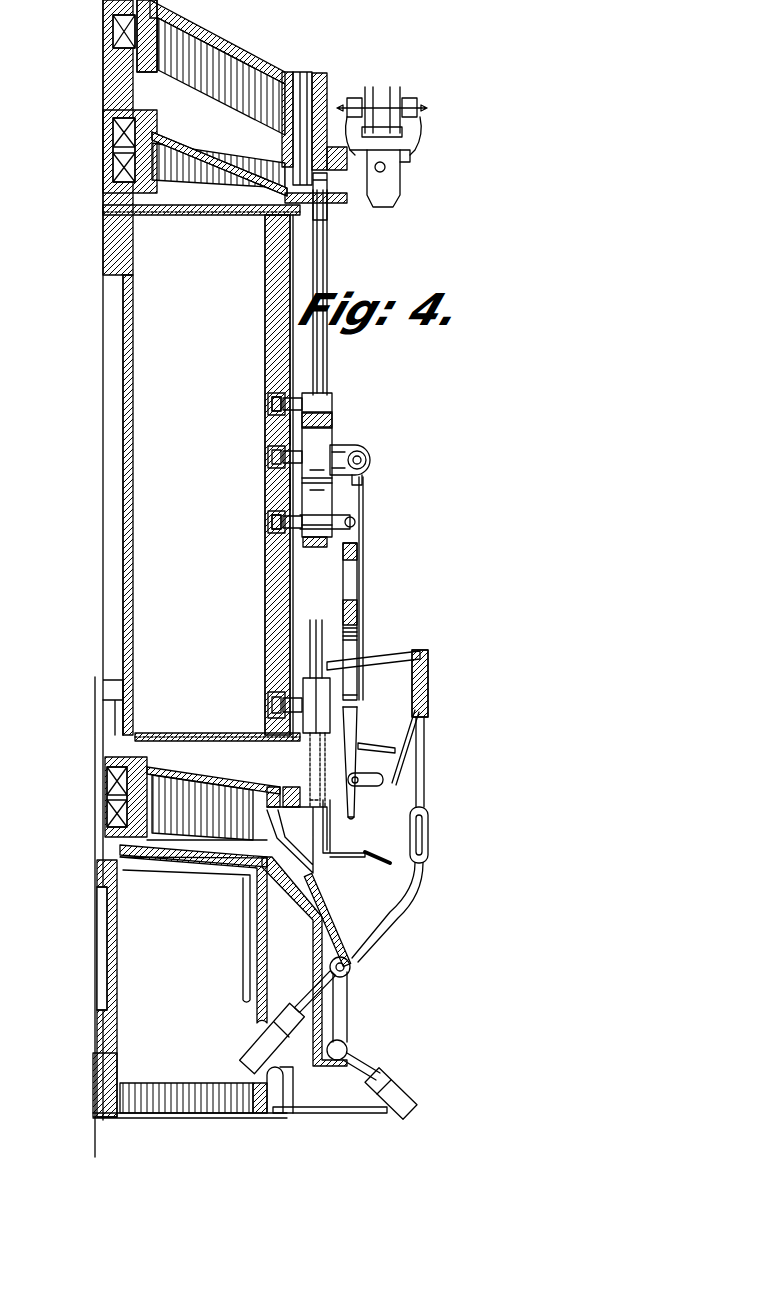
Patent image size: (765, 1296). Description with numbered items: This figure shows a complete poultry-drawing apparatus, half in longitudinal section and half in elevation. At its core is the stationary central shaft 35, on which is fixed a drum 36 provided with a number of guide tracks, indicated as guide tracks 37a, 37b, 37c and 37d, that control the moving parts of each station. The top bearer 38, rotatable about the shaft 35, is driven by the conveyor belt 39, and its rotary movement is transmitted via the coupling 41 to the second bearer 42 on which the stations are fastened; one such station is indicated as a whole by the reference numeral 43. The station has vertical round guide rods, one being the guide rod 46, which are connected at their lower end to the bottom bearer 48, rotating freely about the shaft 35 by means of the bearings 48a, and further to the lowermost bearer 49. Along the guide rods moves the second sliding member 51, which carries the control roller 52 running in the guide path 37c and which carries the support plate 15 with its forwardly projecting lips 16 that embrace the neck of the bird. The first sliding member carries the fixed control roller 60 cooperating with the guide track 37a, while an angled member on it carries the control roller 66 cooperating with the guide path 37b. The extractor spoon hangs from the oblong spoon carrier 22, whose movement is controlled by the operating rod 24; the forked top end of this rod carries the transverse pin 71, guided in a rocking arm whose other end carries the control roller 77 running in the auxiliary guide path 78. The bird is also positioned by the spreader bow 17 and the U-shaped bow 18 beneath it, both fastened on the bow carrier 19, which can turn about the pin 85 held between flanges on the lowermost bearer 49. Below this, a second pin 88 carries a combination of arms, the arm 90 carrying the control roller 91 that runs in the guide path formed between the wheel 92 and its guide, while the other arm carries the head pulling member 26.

The support plate 15 is at (333, 837).
The forwardly projecting lips 16 is at (378, 862).
The spreader bow 17 is at (388, 660).
The U-shaped bow 18 is at (380, 746).
The bow carrier 19 is at (424, 750).
The spoon carrier 22 is at (352, 595).
The operating rod 24 is at (364, 582).
The rocking bow 26 is at (313, 867).
The central shaft 35 is at (121, 246).
The drum 36 is at (272, 272).
The guide track 37a is at (287, 395).
The guide path 37b is at (272, 562).
The guide path 37c is at (262, 680).
The guide path 37d is at (290, 1072).
The top bearer 38 is at (224, 47).
The conveyor belt 39 is at (372, 165).
The coupling 41 is at (300, 143).
The second bearer 42 is at (178, 142).
The station 43 is at (365, 309).
The guide rod 46 is at (323, 250).
The bottom bearer 48 is at (203, 778).
The bearings 48a is at (108, 800).
The lowermost bearer 49 is at (300, 903).
The second sliding member 51 is at (310, 723).
The control roller 52 is at (266, 662).
The fixed control roller 60 is at (282, 398).
The control roller 66 is at (270, 540).
The transverse pin 71 is at (378, 452).
The control roller 77 is at (278, 408).
The auxiliary guide path 78 is at (266, 480).
The pin 85 is at (352, 963).
The second pin 88 is at (350, 1047).
The arm 90 is at (367, 1073).
The control roller 91 is at (400, 1103).
The wheel 92 is at (350, 1113).